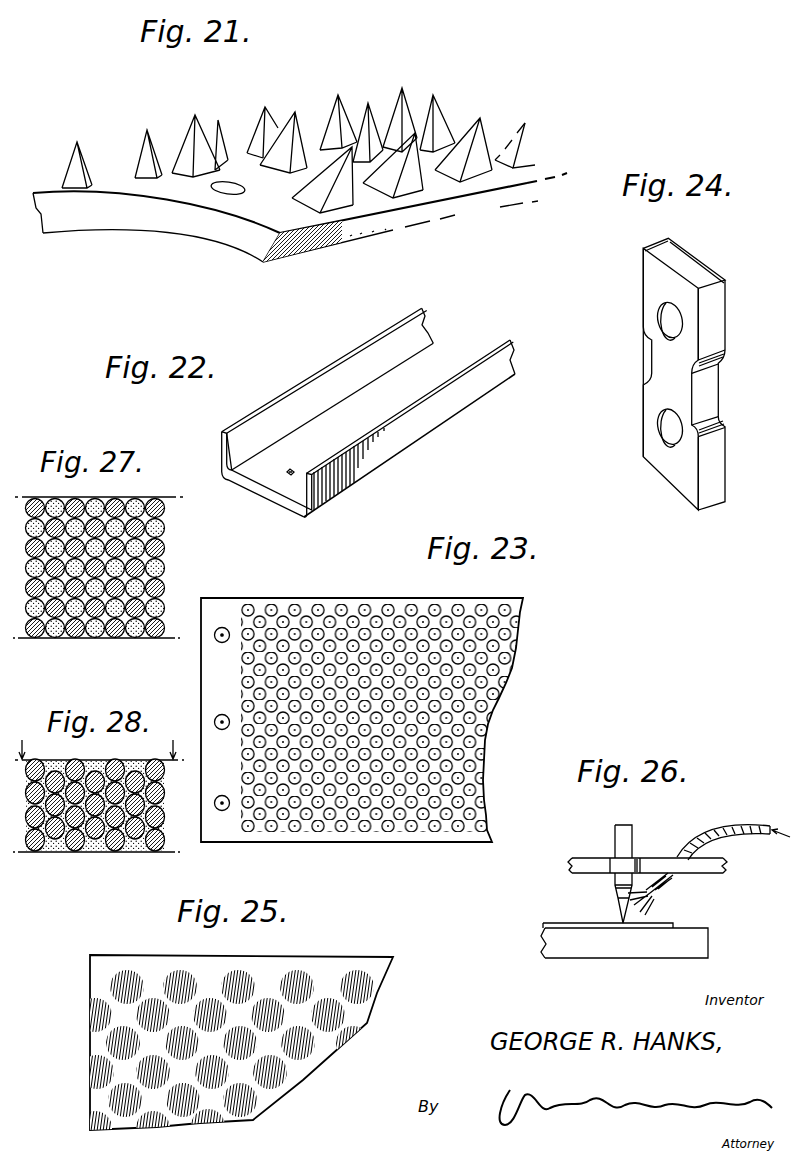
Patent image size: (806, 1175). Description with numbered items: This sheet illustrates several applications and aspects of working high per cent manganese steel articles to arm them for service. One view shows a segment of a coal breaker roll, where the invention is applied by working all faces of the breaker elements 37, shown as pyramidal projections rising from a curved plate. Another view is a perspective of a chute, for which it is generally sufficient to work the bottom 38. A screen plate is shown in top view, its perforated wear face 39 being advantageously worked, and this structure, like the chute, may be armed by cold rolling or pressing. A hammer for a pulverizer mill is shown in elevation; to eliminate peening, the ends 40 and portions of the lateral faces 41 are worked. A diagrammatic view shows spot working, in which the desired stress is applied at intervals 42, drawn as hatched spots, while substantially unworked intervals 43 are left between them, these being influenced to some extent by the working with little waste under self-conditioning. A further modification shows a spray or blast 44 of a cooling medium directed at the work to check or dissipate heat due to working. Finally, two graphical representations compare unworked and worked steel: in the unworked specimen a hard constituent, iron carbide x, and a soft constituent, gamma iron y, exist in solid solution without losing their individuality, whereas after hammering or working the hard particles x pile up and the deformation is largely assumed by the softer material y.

In FIG. 21, the breaker elements 37 is at (87, 167).
In FIG. 22, the bottom 38 is at (437, 360).
In FIG. 23, the wear face 39 is at (335, 617).
In FIG. 24, the ends 40 is at (695, 268).
In FIG. 24, the lateral faces 41 is at (657, 275).
In FIG. 25, the intervals 42 is at (163, 1008).
In FIG. 25, the unworked intervals 43 is at (270, 980).
In FIG. 26, the spray or blast 44 is at (642, 910).
In FIG. 27, the hard constituent x is at (35, 499).
In FIG. 28, the hard constituent x is at (35, 759).
In FIG. 27, the soft constituent y is at (55, 499).
In FIG. 28, the soft constituent y is at (163, 807).